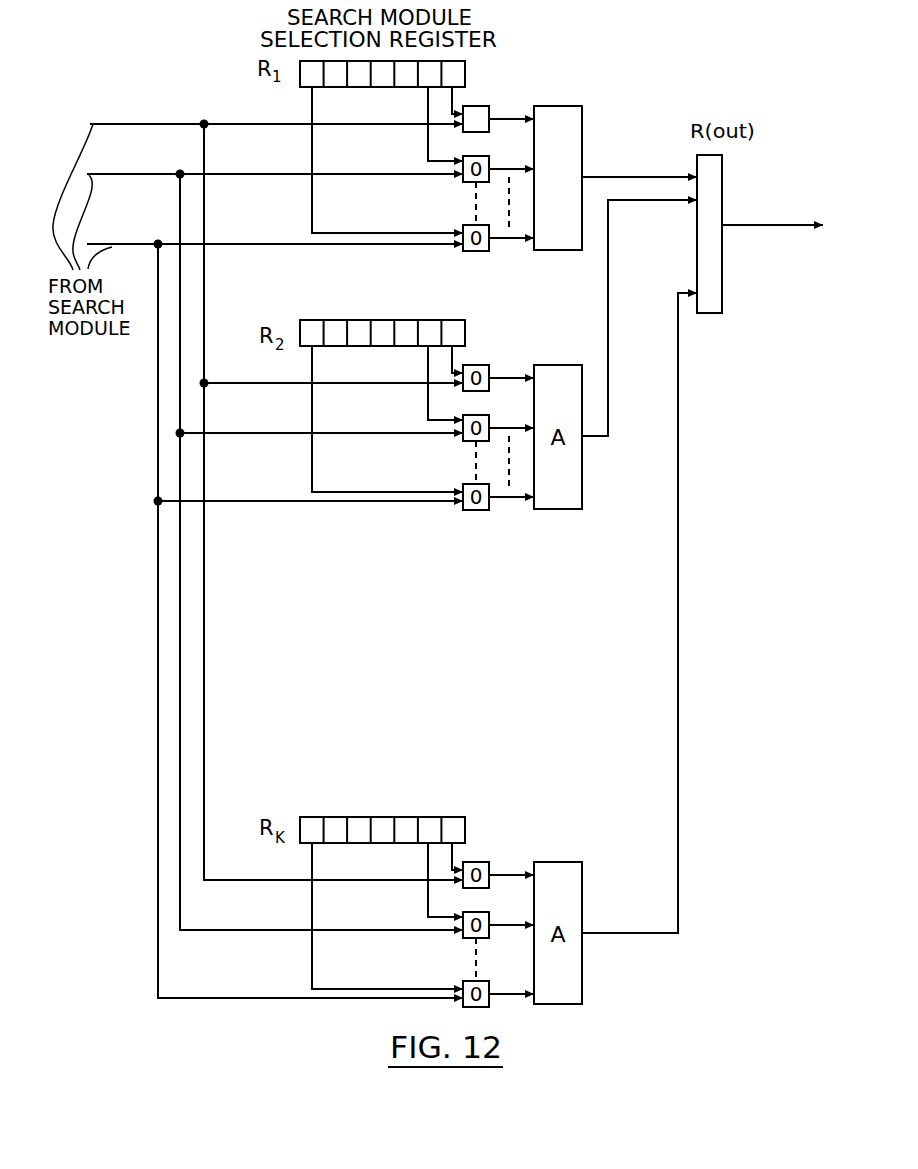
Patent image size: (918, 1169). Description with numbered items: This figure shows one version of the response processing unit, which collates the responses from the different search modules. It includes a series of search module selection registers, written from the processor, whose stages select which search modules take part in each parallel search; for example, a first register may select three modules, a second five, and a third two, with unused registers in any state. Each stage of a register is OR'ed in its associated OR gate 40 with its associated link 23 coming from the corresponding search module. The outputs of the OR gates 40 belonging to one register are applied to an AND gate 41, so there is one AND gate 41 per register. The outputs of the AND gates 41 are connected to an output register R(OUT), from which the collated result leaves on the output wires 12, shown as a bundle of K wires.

The link 23 is at (140, 123).
The OR gate 40 is at (482, 101).
The AND gate 41 is at (558, 96).
The output wires (K wires) 12 is at (772, 224).